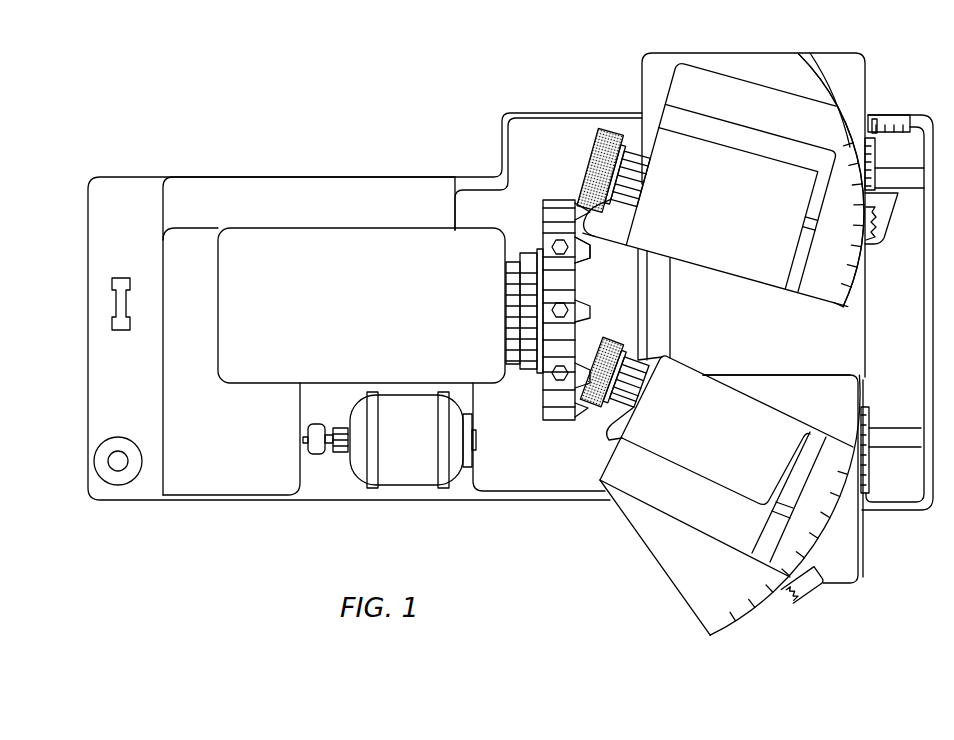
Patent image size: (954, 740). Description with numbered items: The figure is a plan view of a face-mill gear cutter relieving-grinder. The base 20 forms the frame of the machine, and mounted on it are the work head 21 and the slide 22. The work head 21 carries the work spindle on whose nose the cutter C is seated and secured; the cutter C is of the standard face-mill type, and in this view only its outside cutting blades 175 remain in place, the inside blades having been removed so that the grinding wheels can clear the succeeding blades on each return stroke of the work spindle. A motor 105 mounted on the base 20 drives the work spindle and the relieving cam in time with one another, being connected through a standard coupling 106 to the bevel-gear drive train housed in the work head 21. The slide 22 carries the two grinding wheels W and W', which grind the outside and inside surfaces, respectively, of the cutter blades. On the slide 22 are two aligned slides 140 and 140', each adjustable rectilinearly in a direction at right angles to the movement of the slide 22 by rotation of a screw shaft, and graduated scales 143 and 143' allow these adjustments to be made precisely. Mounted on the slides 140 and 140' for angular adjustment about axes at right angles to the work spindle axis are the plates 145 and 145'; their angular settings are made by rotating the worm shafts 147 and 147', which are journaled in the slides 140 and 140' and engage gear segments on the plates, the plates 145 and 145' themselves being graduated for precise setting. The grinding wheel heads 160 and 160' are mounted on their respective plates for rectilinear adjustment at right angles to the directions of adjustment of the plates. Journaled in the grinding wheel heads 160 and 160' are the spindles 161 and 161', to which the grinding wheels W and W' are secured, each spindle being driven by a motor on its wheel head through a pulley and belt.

The base 20 is at (551, 484).
The work head 21 is at (361, 305).
The slide 22 is at (843, 346).
The motor 105 is at (418, 472).
The coupling 106 is at (313, 449).
The slide 140 is at (784, 493).
The slide 140' is at (778, 215).
The graduated scale 143 is at (891, 450).
The graduated scale 143' is at (894, 152).
The plate 145 is at (730, 508).
The plate 145' is at (810, 163).
The worm shaft 147 is at (809, 604).
The worm shaft 147' is at (897, 218).
The grinding wheel head 160 is at (726, 461).
The grinding wheel head 160' is at (740, 178).
The grinding wheel spindle 161 is at (614, 398).
The grinding wheel spindle 161' is at (626, 188).
The outside cutting blade 175 is at (582, 252).
The cutter C is at (567, 342).
The grinding wheel W is at (605, 357).
The grinding wheel W' is at (600, 141).